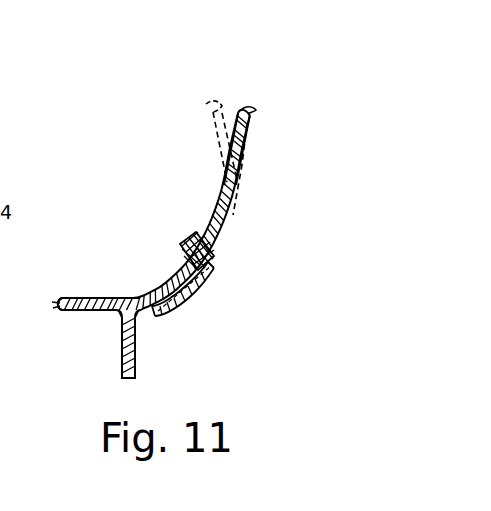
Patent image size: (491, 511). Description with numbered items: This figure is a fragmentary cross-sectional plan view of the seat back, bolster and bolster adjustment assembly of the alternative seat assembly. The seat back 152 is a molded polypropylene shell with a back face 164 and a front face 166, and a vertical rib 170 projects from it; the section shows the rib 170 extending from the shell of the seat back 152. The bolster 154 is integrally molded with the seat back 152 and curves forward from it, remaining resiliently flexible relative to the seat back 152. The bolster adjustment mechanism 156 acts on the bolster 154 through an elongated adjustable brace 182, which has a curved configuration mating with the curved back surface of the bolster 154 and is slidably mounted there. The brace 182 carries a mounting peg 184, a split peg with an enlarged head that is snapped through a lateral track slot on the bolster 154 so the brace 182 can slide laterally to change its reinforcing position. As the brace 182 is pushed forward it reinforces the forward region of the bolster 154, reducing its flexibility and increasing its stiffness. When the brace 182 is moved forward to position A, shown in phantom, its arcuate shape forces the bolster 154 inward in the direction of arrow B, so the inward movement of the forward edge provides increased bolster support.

The seat back 152 is at (62, 298).
The bolster 154 is at (221, 105).
The bolster adjustment mechanism 156 is at (245, 222).
The back face 164 is at (80, 312).
The front face 166 is at (97, 297).
The vertical rib 170 is at (134, 358).
The adjustable brace 182 is at (172, 298).
The mounting peg 184 is at (182, 258).
The forward position of brace A is at (247, 177).
The direction of inward bolster movement B is at (235, 123).